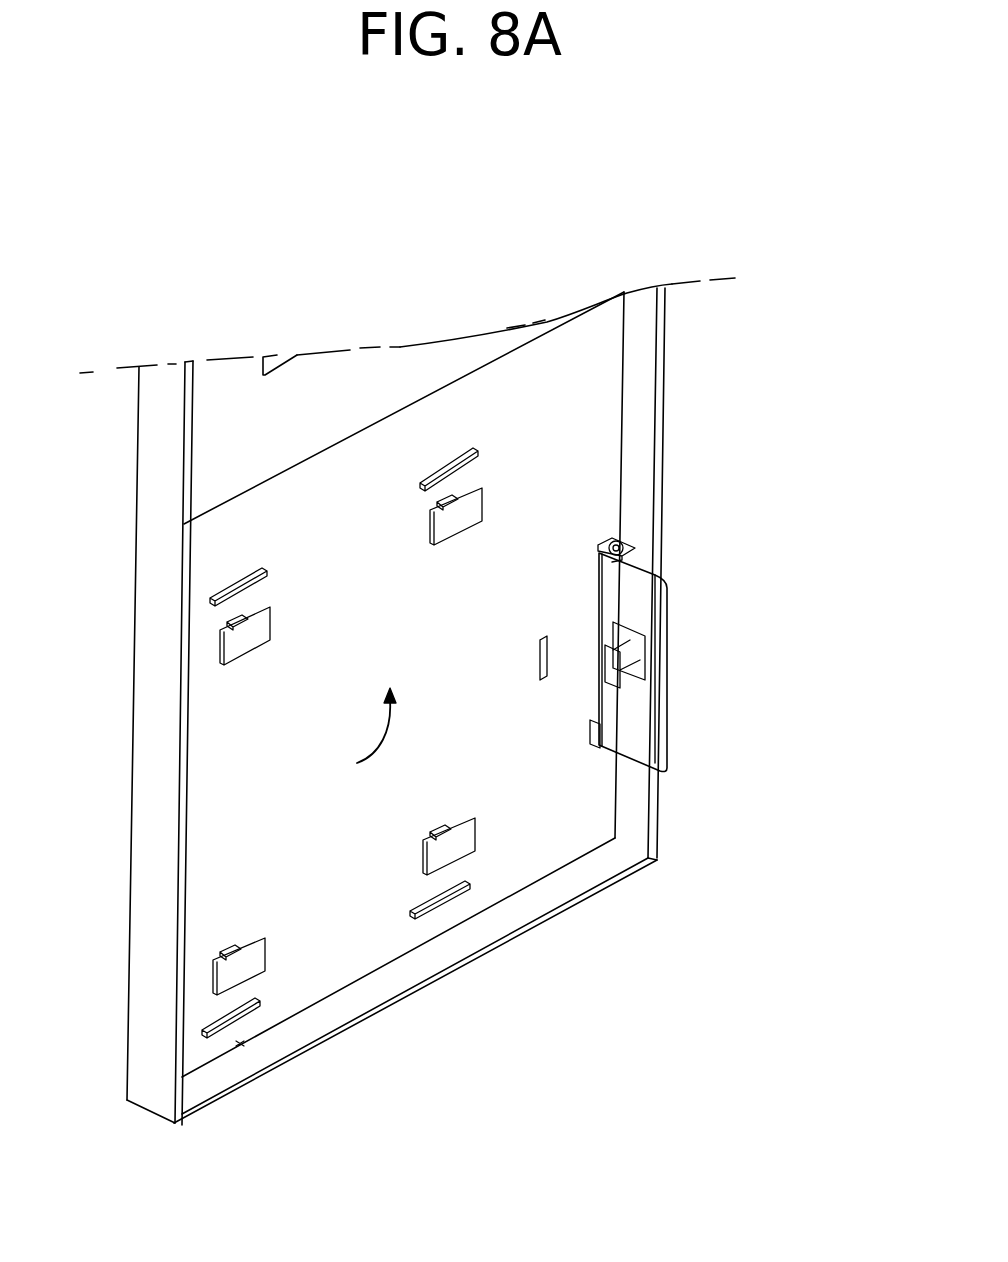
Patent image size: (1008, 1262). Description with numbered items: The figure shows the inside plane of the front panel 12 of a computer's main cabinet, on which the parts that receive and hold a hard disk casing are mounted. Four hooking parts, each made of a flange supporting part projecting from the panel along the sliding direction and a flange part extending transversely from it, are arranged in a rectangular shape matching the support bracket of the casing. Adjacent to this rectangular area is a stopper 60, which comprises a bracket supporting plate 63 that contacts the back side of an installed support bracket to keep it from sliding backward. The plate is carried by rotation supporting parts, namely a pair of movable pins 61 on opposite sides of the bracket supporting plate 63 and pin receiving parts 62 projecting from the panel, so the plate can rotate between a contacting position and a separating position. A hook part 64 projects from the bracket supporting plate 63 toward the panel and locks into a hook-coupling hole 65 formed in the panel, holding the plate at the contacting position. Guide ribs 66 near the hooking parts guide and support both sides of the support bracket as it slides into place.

The front panel 12 is at (356, 732).
The stopper 60 is at (741, 648).
The movable pin 61 is at (620, 538).
The pin receiving part 62 is at (628, 552).
The bracket supporting plate 63 is at (663, 628).
The hook part 64 is at (620, 673).
The hook-coupling hole 65 is at (538, 668).
The guide rib 66 is at (214, 606).